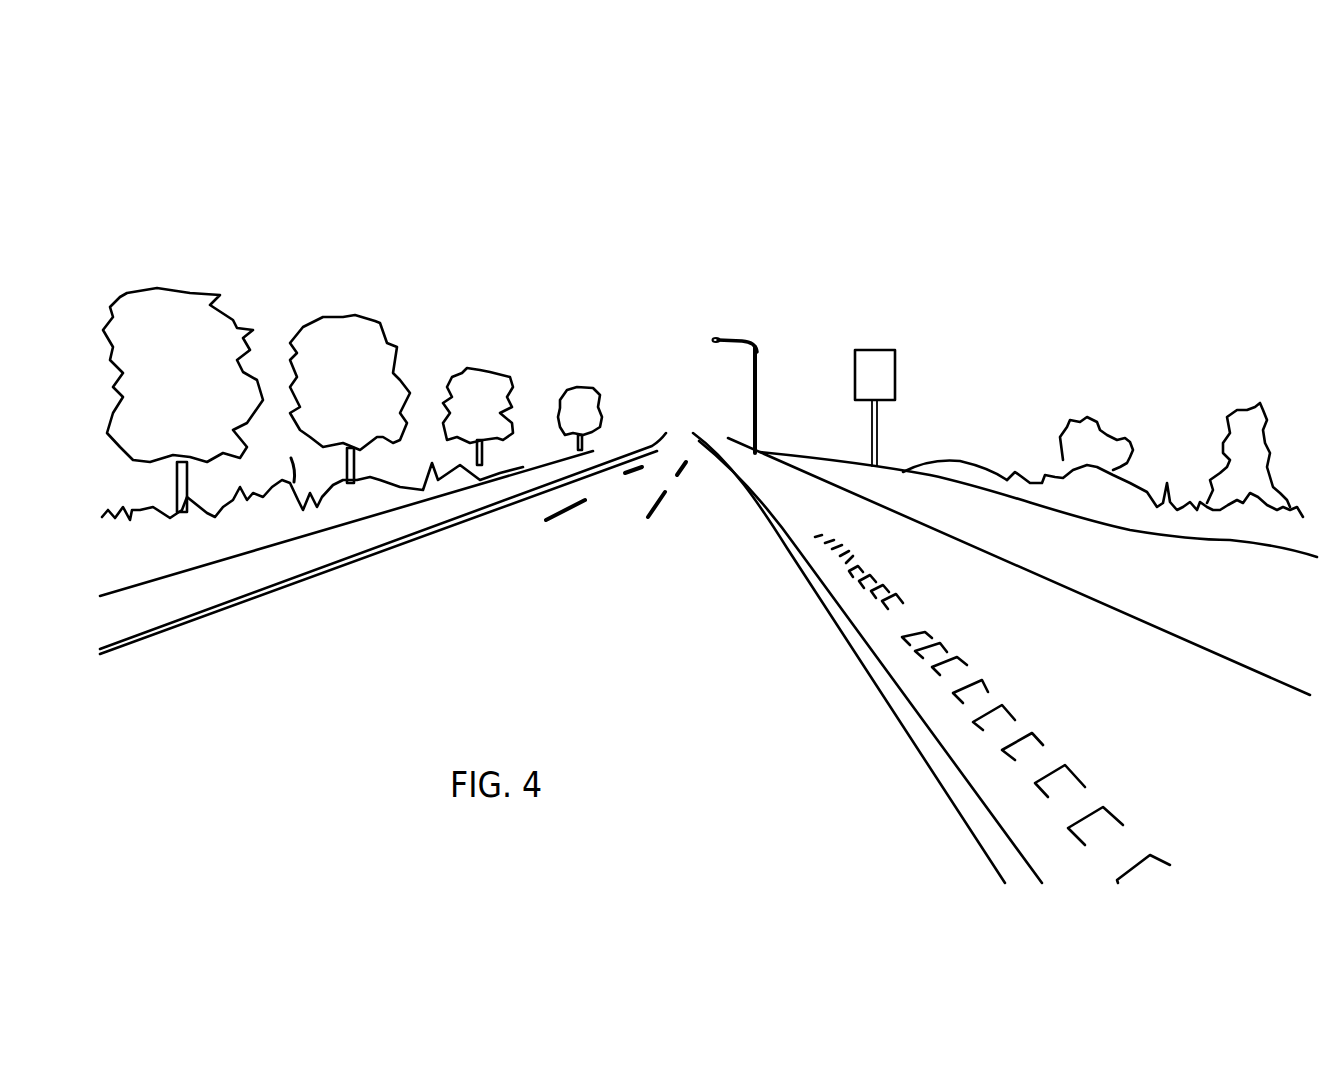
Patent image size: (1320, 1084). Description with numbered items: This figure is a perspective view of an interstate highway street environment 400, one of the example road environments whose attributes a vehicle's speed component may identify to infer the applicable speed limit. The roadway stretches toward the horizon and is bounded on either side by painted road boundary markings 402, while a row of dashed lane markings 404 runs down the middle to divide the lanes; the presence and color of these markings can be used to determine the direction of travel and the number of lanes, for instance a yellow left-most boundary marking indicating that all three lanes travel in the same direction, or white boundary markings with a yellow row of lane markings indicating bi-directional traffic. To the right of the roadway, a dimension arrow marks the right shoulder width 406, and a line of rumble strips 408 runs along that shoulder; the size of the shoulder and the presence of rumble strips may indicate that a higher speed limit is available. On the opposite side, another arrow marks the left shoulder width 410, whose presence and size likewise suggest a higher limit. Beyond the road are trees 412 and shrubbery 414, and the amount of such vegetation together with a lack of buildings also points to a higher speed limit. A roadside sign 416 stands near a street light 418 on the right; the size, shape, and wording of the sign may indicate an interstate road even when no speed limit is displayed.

The interstate highway street environment 400 is at (918, 163).
The road boundary markings 402 is at (197, 613).
The lane markings 404 is at (656, 516).
The right shoulder width 406 is at (1140, 624).
The rumble strips 408 is at (969, 687).
The left shoulder width 410 is at (243, 590).
The trees 412 is at (359, 320).
The shrubbery 414 is at (1007, 478).
The signs 416 is at (872, 352).
The street lights 418 is at (747, 344).